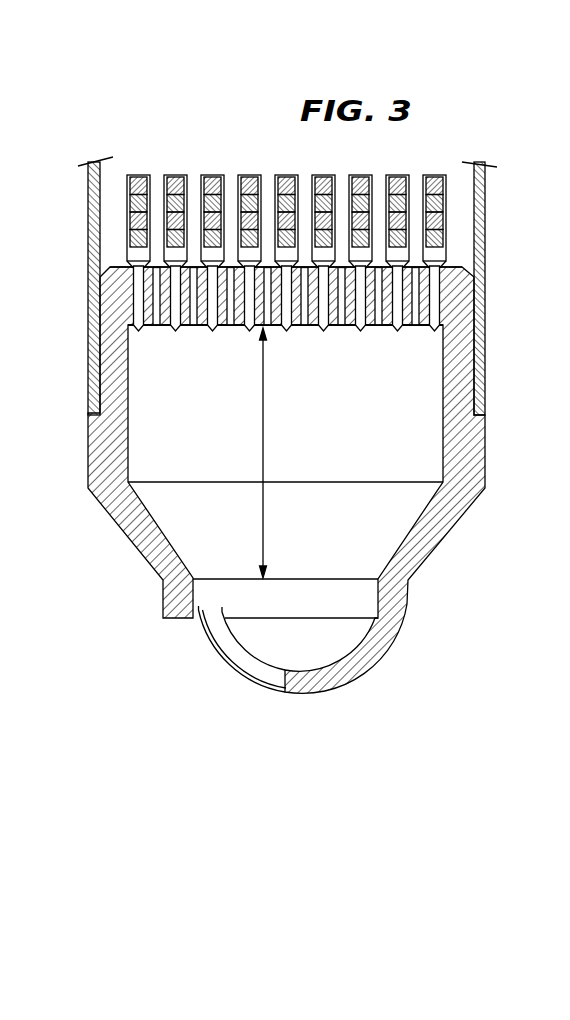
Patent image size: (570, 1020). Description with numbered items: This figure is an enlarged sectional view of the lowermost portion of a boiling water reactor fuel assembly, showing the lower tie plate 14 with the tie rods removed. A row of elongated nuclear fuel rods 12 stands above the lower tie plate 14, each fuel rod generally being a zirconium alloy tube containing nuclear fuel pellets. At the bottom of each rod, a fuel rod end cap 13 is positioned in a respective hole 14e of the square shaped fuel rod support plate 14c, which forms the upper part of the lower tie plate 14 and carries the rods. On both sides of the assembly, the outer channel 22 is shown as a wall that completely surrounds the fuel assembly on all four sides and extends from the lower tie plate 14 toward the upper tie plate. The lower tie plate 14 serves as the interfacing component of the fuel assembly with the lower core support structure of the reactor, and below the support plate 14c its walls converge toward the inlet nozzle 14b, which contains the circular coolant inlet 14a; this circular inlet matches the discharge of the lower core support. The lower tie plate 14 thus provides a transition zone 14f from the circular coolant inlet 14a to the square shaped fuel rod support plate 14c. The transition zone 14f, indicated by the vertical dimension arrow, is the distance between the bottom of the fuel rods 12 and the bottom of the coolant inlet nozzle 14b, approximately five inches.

The nuclear fuel rods 12 is at (127, 213).
The fuel rod end caps 13 is at (136, 301).
The lower tie plate 14 is at (462, 378).
The circular coolant inlet 14a is at (377, 600).
The inlet nozzle 14b is at (388, 618).
The fuel rod support plate 14c is at (232, 268).
The holes 14e is at (172, 327).
The transition zone 14f is at (263, 455).
The outer channel 22 is at (88, 193).